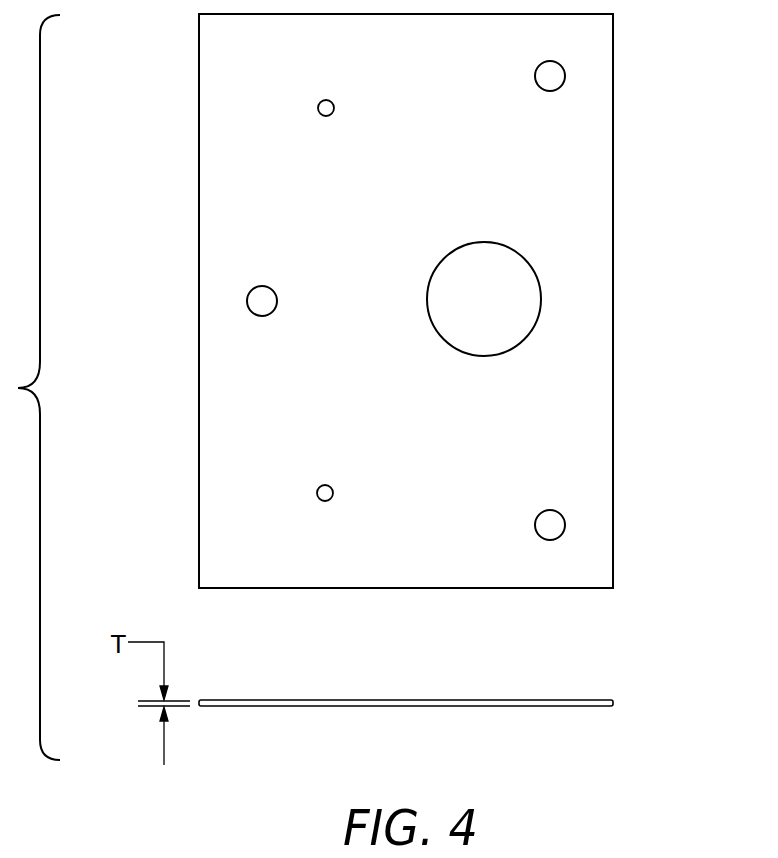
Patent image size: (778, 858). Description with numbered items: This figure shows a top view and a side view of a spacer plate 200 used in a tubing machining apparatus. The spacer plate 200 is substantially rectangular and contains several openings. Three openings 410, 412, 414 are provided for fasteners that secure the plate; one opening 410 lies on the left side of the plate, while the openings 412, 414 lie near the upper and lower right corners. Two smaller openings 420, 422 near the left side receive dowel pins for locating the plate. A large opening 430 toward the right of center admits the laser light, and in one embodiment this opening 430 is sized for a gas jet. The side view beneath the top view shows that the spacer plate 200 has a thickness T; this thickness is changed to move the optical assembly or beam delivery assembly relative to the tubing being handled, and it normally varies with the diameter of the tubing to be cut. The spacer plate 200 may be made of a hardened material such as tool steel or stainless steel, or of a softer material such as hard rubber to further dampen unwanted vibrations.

The spacer plate 200 is at (614, 300).
The opening 410 is at (258, 298).
The opening 412 is at (552, 78).
The opening 414 is at (552, 527).
The opening 420 is at (320, 104).
The opening 422 is at (320, 490).
The opening 430 is at (507, 282).